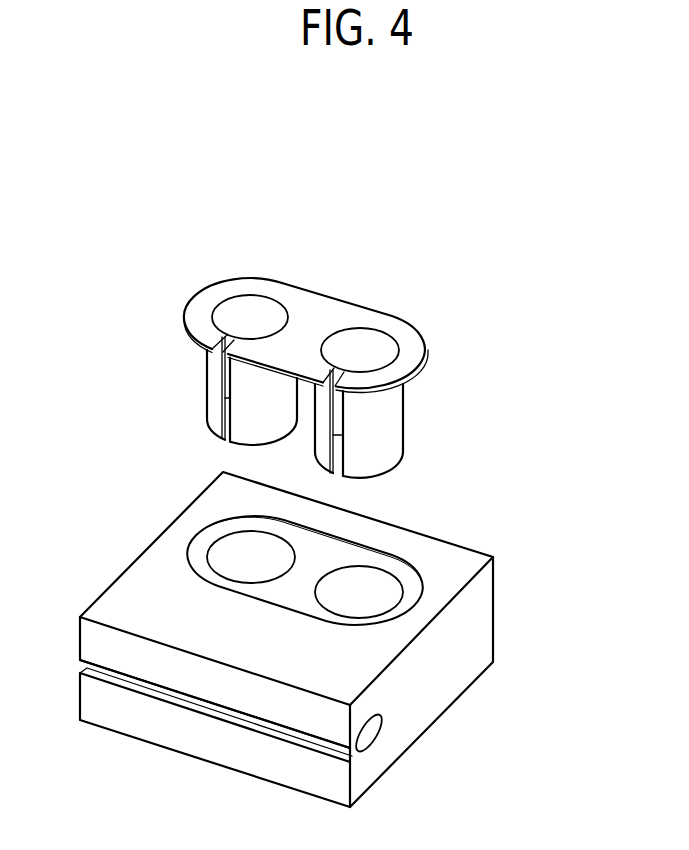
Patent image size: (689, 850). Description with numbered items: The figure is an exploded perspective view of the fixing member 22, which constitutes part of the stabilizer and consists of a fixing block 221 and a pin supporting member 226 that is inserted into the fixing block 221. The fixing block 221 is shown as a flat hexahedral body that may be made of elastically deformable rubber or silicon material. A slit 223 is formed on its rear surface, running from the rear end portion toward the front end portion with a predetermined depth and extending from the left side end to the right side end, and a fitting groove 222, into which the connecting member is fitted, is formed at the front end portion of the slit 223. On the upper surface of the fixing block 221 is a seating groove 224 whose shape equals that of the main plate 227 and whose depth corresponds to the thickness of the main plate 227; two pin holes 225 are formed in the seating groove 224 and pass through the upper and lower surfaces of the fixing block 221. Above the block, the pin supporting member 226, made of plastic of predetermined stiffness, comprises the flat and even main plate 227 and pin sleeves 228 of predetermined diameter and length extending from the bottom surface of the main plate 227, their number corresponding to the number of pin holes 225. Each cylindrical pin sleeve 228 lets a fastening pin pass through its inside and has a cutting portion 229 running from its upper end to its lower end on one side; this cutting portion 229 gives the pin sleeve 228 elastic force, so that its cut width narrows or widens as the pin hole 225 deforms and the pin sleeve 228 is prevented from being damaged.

The fixing member 22 is at (424, 212).
The fixing block 221 is at (577, 817).
The fitting groove 222 is at (372, 727).
The slit 223 is at (348, 755).
The seating groove 224 is at (413, 583).
The pin hole 225 is at (383, 600).
The pin supporting member 226 is at (522, 470).
The main plate 227 is at (407, 335).
The pin sleeve 228 is at (390, 408).
The cutting portion 229 is at (340, 447).